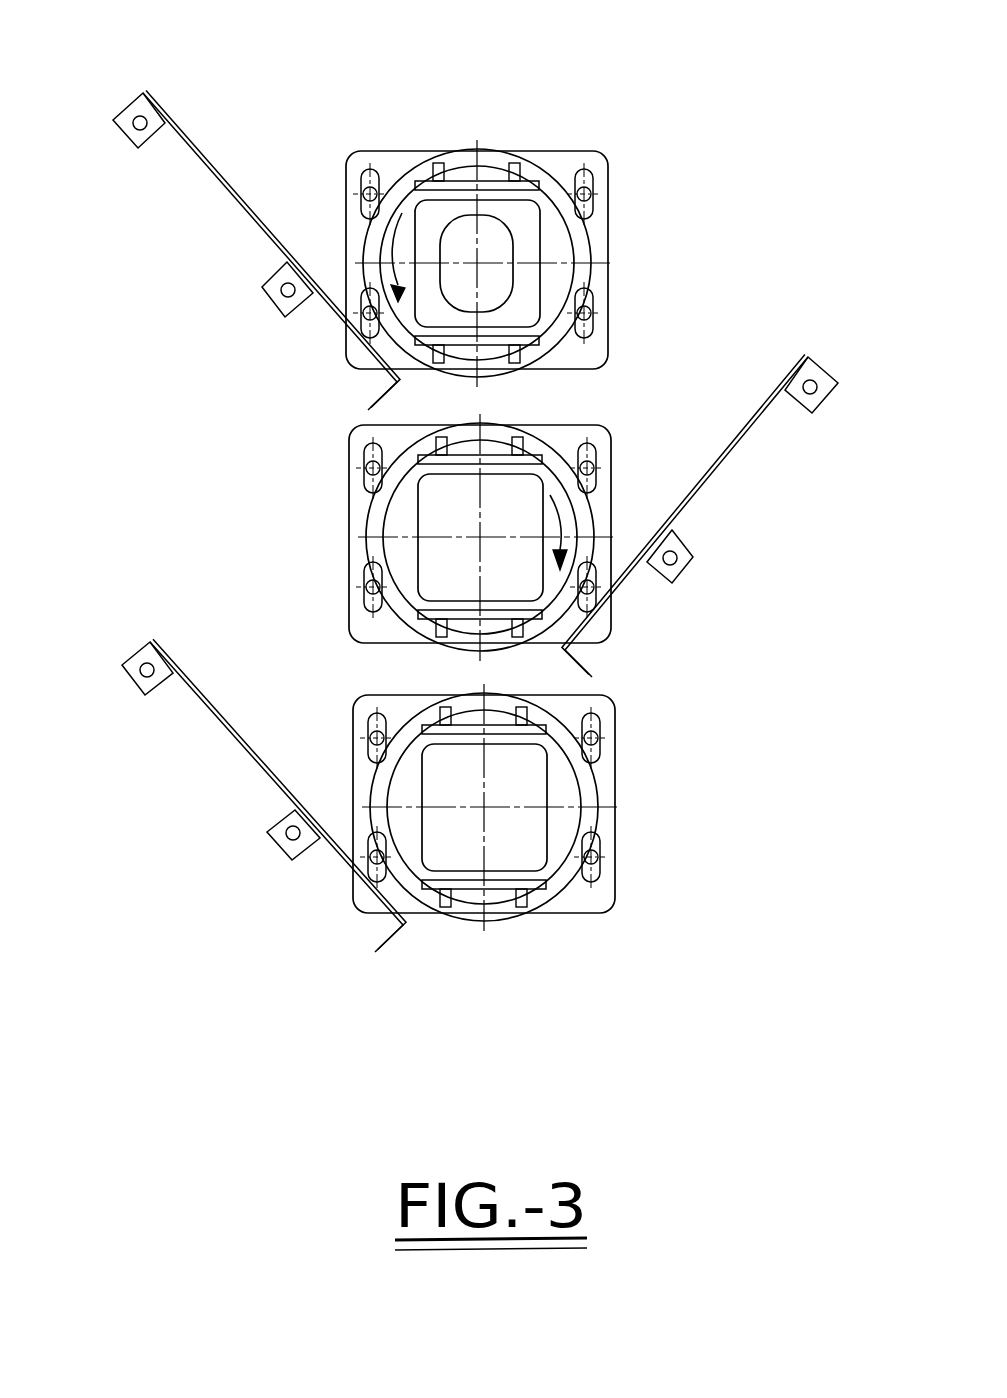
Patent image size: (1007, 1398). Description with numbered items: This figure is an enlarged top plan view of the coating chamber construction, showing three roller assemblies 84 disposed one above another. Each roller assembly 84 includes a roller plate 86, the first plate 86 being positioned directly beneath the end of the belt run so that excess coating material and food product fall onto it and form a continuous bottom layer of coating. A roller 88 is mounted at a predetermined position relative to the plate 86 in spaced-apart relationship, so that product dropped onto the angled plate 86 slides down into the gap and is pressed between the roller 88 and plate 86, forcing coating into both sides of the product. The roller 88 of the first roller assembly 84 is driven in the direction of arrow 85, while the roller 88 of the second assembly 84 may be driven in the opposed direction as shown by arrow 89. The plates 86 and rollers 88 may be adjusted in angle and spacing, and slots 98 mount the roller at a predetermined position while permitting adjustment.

The roller assembly 84 is at (515, 193).
The arrow 85 is at (393, 248).
The roller plate 86 is at (233, 204).
The roller 88 is at (431, 168).
The arrow 89 is at (563, 532).
The mounting slot 98 is at (592, 173).